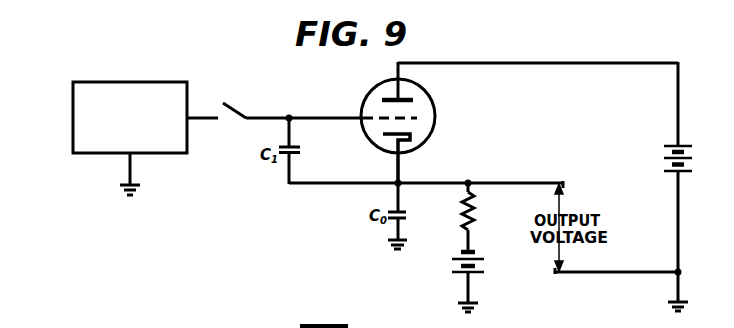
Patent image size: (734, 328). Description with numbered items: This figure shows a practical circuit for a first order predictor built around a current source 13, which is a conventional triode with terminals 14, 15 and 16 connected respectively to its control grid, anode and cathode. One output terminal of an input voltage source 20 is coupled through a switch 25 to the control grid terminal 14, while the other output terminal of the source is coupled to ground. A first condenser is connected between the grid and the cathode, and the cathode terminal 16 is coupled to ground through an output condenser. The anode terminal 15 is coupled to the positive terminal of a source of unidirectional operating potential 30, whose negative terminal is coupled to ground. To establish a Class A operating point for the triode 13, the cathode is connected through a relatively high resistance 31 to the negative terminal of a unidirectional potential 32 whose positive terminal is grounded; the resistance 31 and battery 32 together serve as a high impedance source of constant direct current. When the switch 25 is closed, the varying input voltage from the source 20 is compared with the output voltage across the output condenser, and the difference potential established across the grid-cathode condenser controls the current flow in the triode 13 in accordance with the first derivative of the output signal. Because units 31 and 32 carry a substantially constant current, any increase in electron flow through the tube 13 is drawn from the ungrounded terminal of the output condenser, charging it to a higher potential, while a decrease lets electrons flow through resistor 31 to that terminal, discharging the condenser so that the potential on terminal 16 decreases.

The input voltage source 20 is at (73, 113).
The switch 25 is at (237, 101).
The current source triode 13 is at (386, 80).
The control grid terminal 14 is at (362, 112).
The anode terminal 15 is at (403, 70).
The cathode terminal 16 is at (400, 147).
The source of unidirectional operating potential 30 is at (693, 156).
The high resistance 31 is at (466, 215).
The unidirectional potential 32 is at (486, 270).